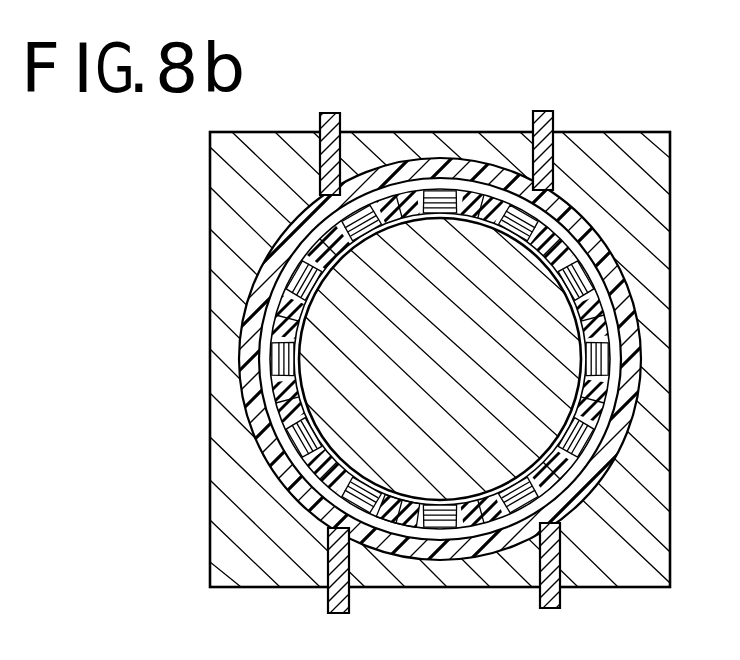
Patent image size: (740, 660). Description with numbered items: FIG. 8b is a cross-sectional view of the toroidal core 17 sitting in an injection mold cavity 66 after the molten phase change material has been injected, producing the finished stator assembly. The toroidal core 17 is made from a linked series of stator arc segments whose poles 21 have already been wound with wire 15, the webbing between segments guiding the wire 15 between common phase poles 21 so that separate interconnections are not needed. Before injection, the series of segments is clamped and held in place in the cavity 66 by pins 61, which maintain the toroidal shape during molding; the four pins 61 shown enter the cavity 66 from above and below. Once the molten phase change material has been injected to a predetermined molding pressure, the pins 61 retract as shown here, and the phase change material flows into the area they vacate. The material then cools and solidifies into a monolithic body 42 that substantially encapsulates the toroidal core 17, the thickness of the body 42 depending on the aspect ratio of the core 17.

The wire 15 is at (292, 292).
The toroidal core 17 is at (272, 470).
The poles 21 is at (424, 212).
The body 42 is at (409, 518).
The pins 61 is at (321, 113).
The injection mold cavity 66 is at (282, 397).